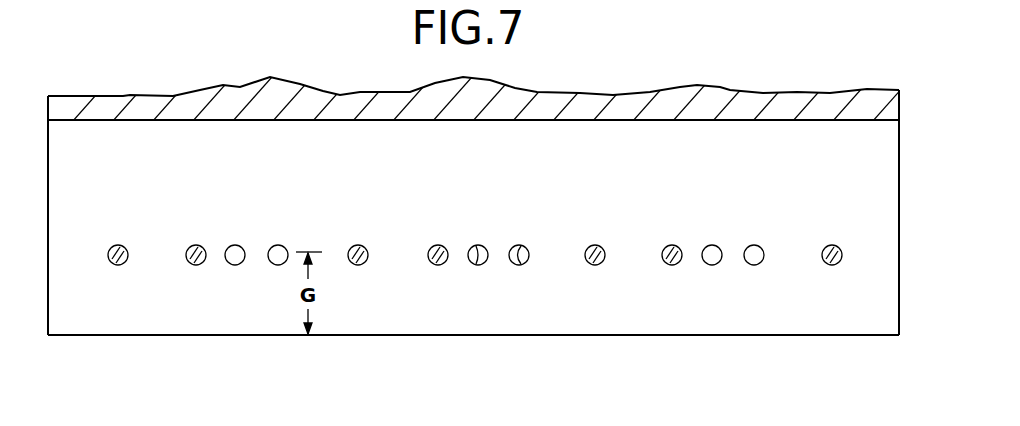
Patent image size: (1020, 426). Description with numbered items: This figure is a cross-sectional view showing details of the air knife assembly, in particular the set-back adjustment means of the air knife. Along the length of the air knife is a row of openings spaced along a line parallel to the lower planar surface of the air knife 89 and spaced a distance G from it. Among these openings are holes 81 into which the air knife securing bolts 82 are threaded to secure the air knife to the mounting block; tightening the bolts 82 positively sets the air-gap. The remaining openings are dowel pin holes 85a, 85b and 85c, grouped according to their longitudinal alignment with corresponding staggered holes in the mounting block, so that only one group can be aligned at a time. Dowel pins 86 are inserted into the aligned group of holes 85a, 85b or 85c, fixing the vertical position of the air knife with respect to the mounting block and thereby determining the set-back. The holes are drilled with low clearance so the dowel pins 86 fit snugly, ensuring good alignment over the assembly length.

The holes 81 is at (118, 265).
The air knife securing bolts 82 is at (118, 245).
The dowel pin holes 85a is at (437, 265).
The dowel pin holes 85b is at (478, 245).
The dowel pin holes 85c is at (519, 265).
The dowel pins 86 is at (194, 246).
The lower planar surface of the air knife 89 is at (196, 336).